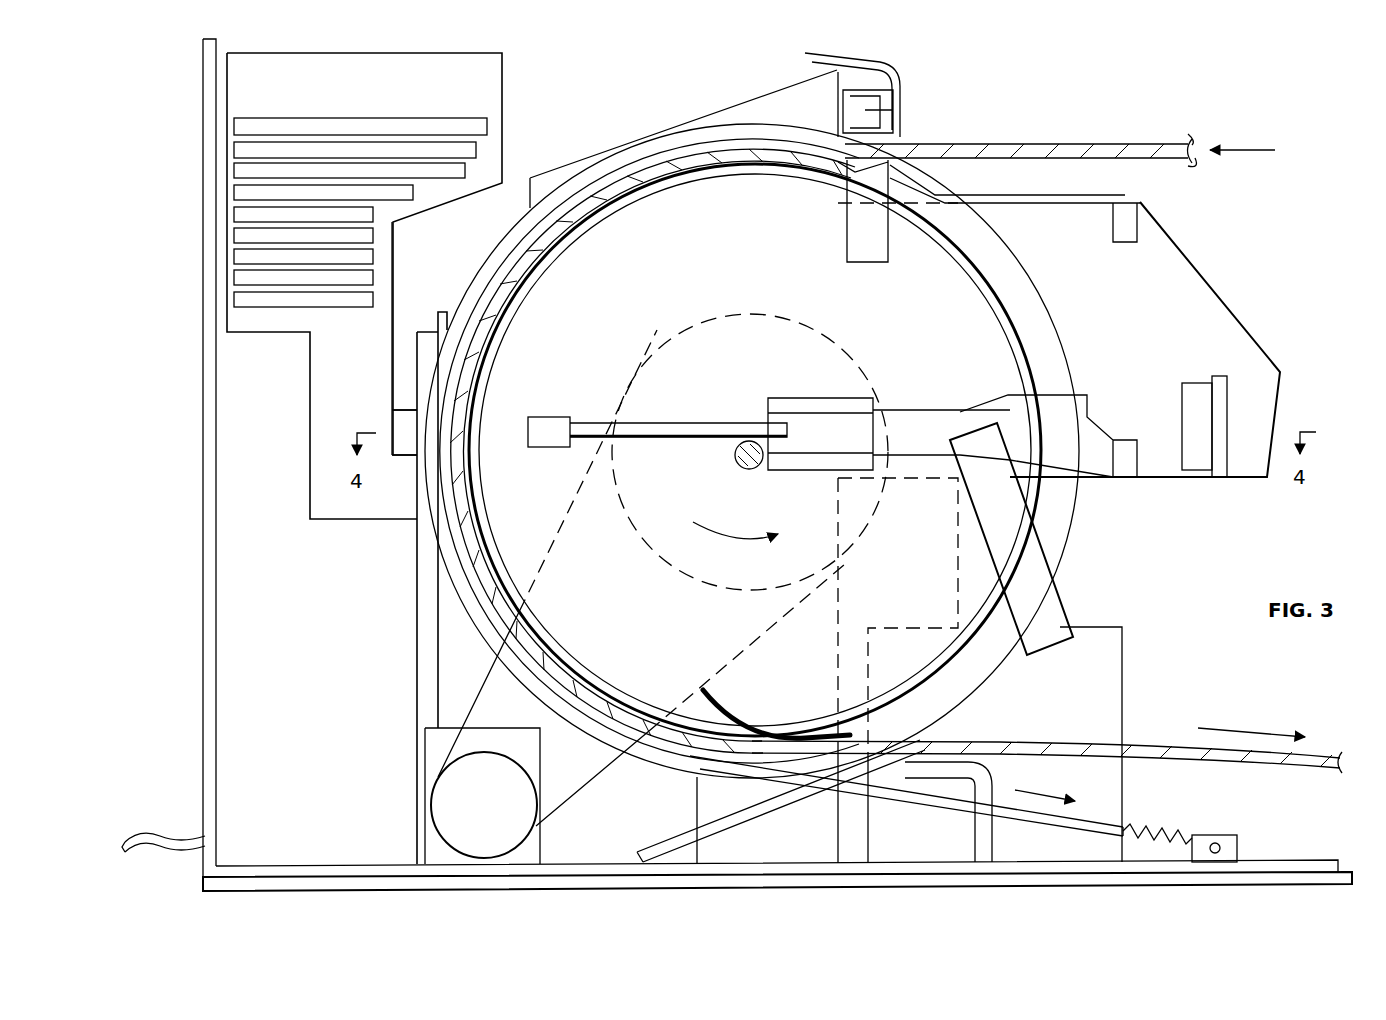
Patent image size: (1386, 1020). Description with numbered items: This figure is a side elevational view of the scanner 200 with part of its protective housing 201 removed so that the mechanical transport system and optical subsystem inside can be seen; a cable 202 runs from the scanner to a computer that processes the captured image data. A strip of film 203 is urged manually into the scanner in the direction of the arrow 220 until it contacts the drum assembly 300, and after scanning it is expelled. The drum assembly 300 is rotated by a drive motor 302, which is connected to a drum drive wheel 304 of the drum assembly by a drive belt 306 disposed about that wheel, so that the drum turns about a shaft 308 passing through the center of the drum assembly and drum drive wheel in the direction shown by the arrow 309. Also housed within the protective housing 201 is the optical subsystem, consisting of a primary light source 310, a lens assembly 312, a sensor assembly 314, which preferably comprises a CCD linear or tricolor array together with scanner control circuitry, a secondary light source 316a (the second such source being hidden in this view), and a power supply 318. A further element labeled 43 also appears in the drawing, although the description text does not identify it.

The scanner 200 is at (508, 92).
The protective housing 201 is at (204, 895).
The cable 202 is at (152, 838).
The film 203 is at (985, 144).
The arrow 220 is at (1250, 150).
The drum assembly 300 is at (683, 232).
The drive motor 302 is at (473, 778).
The drum drive wheel 304 is at (786, 312).
The drive belt 306 is at (597, 780).
The shaft 308 is at (751, 470).
The arrow 309 is at (712, 540).
The primary light source 310 is at (392, 422).
The lens assembly 312 is at (1058, 395).
The sensor assembly 314 is at (1200, 477).
The secondary light source 316a is at (568, 417).
The power supply 318 is at (437, 207).
The belt 43 is at (572, 503).